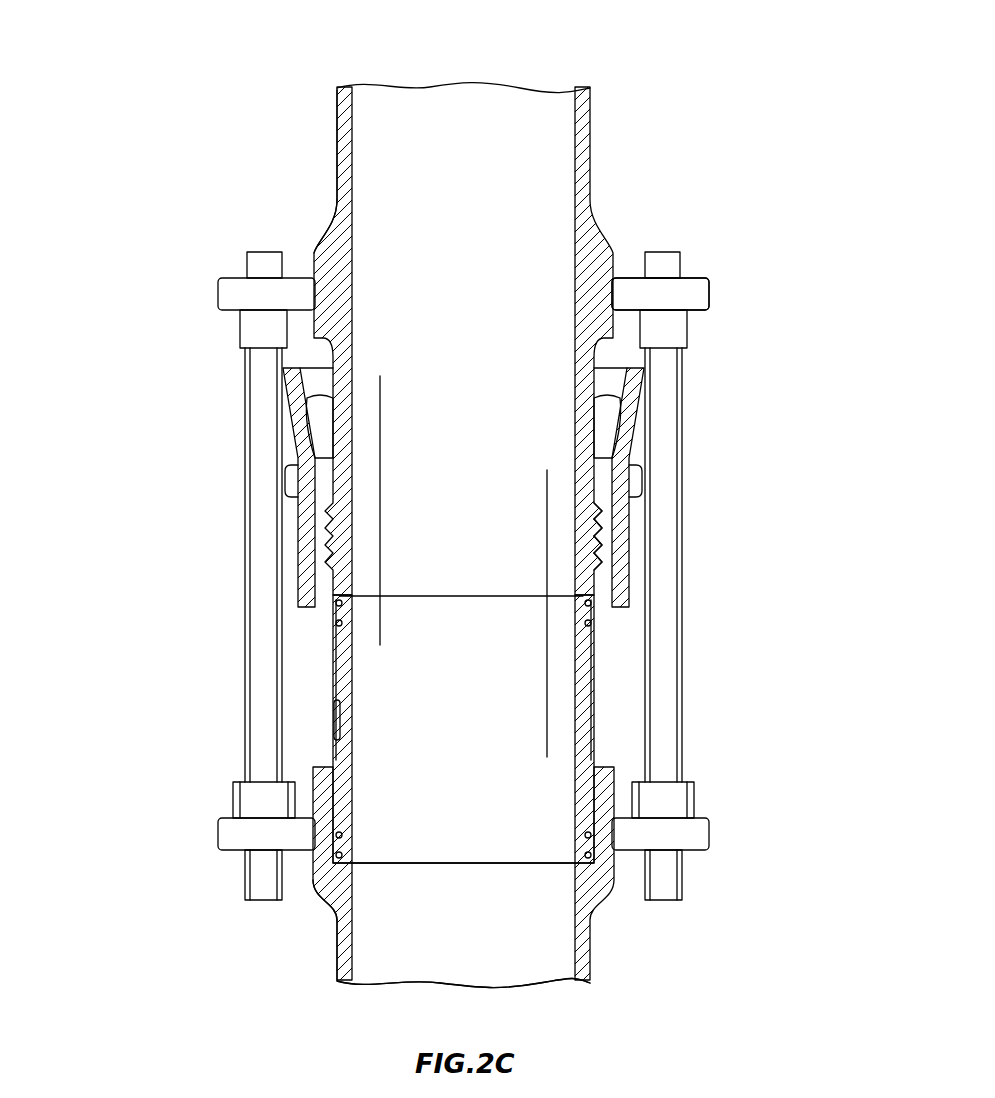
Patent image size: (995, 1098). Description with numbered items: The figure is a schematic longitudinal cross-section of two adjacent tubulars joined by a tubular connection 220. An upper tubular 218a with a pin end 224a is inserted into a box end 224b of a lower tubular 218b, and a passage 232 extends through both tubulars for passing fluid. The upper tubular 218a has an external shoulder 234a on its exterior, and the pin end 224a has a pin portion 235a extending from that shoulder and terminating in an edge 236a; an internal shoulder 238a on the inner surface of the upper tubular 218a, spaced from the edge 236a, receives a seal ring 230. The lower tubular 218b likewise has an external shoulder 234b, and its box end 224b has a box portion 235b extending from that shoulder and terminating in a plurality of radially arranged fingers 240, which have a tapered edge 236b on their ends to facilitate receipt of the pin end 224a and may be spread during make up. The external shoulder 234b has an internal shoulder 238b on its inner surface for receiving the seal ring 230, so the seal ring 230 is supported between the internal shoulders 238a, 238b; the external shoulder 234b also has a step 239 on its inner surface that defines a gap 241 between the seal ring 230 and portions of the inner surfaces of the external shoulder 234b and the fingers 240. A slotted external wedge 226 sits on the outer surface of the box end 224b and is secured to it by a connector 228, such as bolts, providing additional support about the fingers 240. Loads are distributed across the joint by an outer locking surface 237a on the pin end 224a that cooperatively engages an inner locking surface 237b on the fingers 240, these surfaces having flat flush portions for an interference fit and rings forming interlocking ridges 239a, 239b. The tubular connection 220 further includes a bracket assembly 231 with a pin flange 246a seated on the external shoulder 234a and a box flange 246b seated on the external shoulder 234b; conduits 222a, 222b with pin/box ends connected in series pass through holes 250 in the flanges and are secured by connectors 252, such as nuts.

The tubular connection 220 is at (140, 90).
The upper tubular 218a is at (592, 177).
The lower tubular 218b is at (592, 937).
The pin end 224a is at (343, 127).
The box end 224b is at (340, 917).
The external shoulder 234a is at (318, 252).
The external shoulder 234b is at (313, 870).
The pin flange 246a is at (709, 288).
The box flange 246b is at (709, 837).
The bracket assembly 231 is at (724, 300).
The connectors 252 is at (240, 330).
The holes 250 is at (248, 866).
The conduit 222a is at (243, 367).
The conduit 222b is at (682, 418).
The slotted external wedge 226 is at (630, 437).
The connector 228 is at (320, 481).
The tapered edge 236b is at (287, 483).
The edge 236a is at (323, 675).
The pin portion 235a is at (372, 368).
The box portion 235b is at (547, 470).
The interlocking ridge 239a is at (598, 517).
The interlocking ridge 239b is at (600, 531).
The outer locking surface 237a is at (612, 552).
The inner locking surface 237b is at (583, 568).
The internal shoulder 238a is at (340, 597).
The internal shoulder 238b is at (592, 872).
The seal ring 230 is at (595, 680).
The fingers 240 is at (323, 638).
The gap 241 is at (345, 740).
The step 239 is at (336, 830).
The passage 232 is at (353, 975).